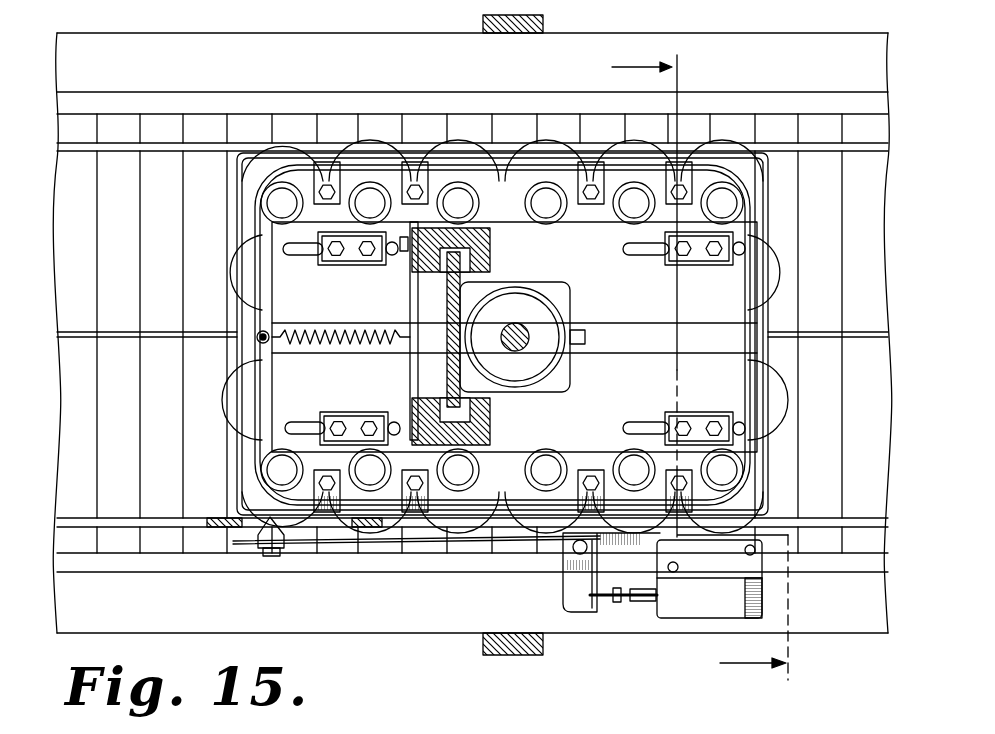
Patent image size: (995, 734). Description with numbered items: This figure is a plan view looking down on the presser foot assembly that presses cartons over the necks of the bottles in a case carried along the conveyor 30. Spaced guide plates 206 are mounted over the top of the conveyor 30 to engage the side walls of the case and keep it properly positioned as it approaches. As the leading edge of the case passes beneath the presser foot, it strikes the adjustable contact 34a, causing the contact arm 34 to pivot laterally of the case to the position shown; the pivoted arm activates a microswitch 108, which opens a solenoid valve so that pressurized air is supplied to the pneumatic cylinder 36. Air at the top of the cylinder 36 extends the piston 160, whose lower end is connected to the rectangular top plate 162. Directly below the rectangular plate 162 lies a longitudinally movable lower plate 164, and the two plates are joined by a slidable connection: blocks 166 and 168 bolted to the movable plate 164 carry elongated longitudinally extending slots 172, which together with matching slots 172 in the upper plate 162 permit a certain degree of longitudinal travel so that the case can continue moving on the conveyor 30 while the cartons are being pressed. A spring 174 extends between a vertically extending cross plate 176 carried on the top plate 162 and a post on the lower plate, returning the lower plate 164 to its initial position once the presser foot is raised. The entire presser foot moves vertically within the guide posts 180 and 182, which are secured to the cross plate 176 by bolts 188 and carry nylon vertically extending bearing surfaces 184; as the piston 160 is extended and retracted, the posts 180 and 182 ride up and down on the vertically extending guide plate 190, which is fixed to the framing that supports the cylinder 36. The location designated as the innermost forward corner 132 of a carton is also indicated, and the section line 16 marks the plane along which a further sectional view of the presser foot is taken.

The conveyor 30 is at (878, 410).
The guide plates 206 is at (123, 152).
The longitudinally movable plate 164 is at (262, 425).
The rectangular plate 162 is at (730, 307).
The vertically extending plate 176 is at (410, 302).
The guide post 180 is at (490, 246).
The guide post 182 is at (490, 426).
The bearing surfaces 184 is at (480, 256).
The guide plate 190 is at (447, 368).
The bolts 188 is at (402, 238).
The pneumatic cylinder 36 is at (543, 294).
The piston 160 is at (528, 330).
The block 166 is at (350, 266).
The block 168 is at (344, 411).
The slots 172 is at (296, 254).
The spring 174 is at (320, 334).
The innermost forward corner 132 is at (258, 341).
The contact arm 34 is at (332, 545).
The adjustable contact 34a is at (265, 550).
The microswitch 108 is at (692, 596).
The section line 16- 16 is at (682, 369).